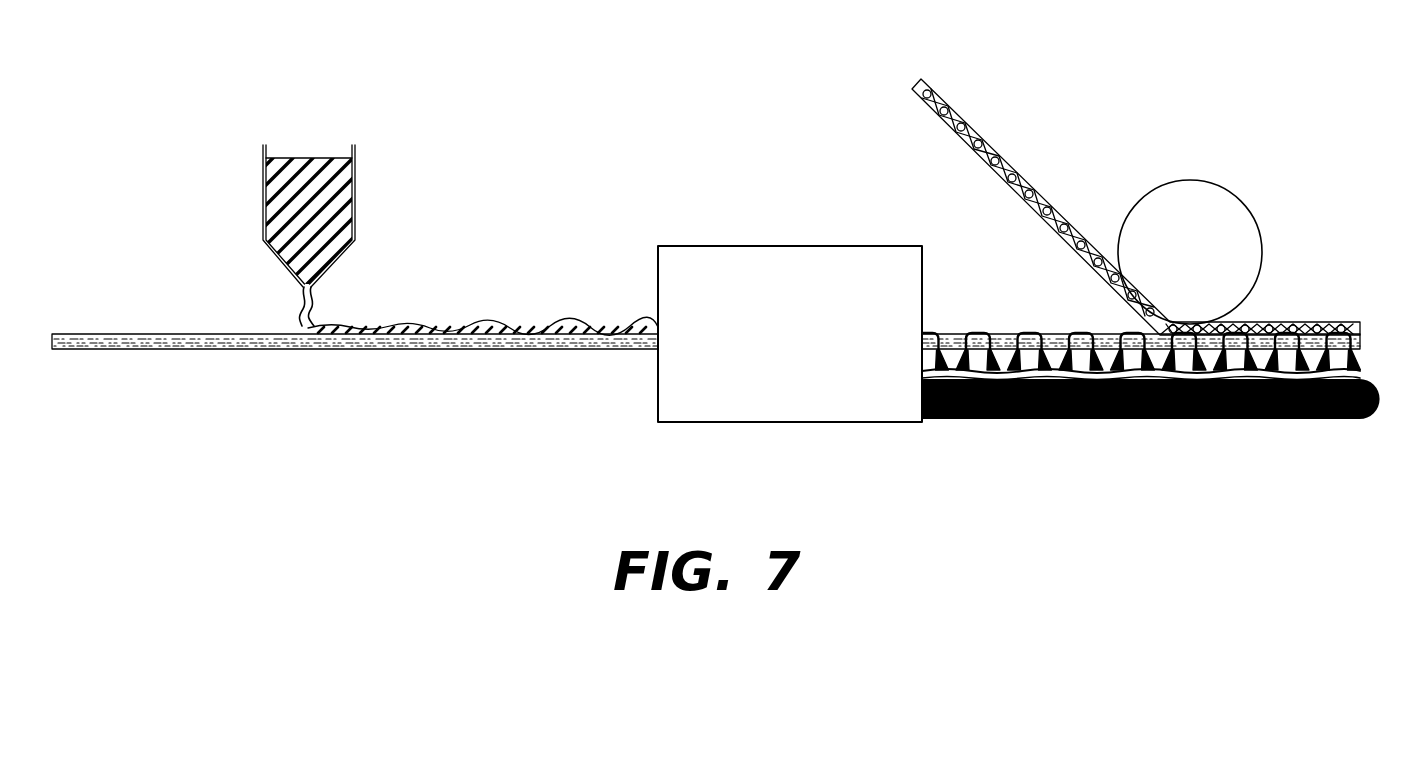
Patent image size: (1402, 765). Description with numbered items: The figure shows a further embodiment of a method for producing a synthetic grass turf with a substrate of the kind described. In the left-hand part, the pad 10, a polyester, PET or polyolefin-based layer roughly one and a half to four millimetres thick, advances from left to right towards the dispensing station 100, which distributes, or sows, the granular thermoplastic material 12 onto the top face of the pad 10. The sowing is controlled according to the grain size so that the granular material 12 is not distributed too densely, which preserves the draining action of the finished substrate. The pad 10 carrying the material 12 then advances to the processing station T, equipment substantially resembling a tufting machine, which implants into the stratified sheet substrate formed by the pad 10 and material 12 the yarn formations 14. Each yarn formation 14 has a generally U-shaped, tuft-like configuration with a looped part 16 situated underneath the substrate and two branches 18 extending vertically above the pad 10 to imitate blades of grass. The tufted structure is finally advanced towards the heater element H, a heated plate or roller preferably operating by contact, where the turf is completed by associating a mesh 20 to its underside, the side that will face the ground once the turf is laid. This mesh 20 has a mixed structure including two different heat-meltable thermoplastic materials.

The pad 10 is at (113, 333).
The granular thermoplastic material 12 is at (448, 330).
The yarn formations 14 is at (969, 318).
The looped part 16 is at (1074, 332).
The branches 18 is at (1096, 421).
The mesh 20 is at (1015, 180).
The dispensing station 100 is at (354, 196).
The processing station T is at (681, 253).
The heater element H is at (1190, 190).